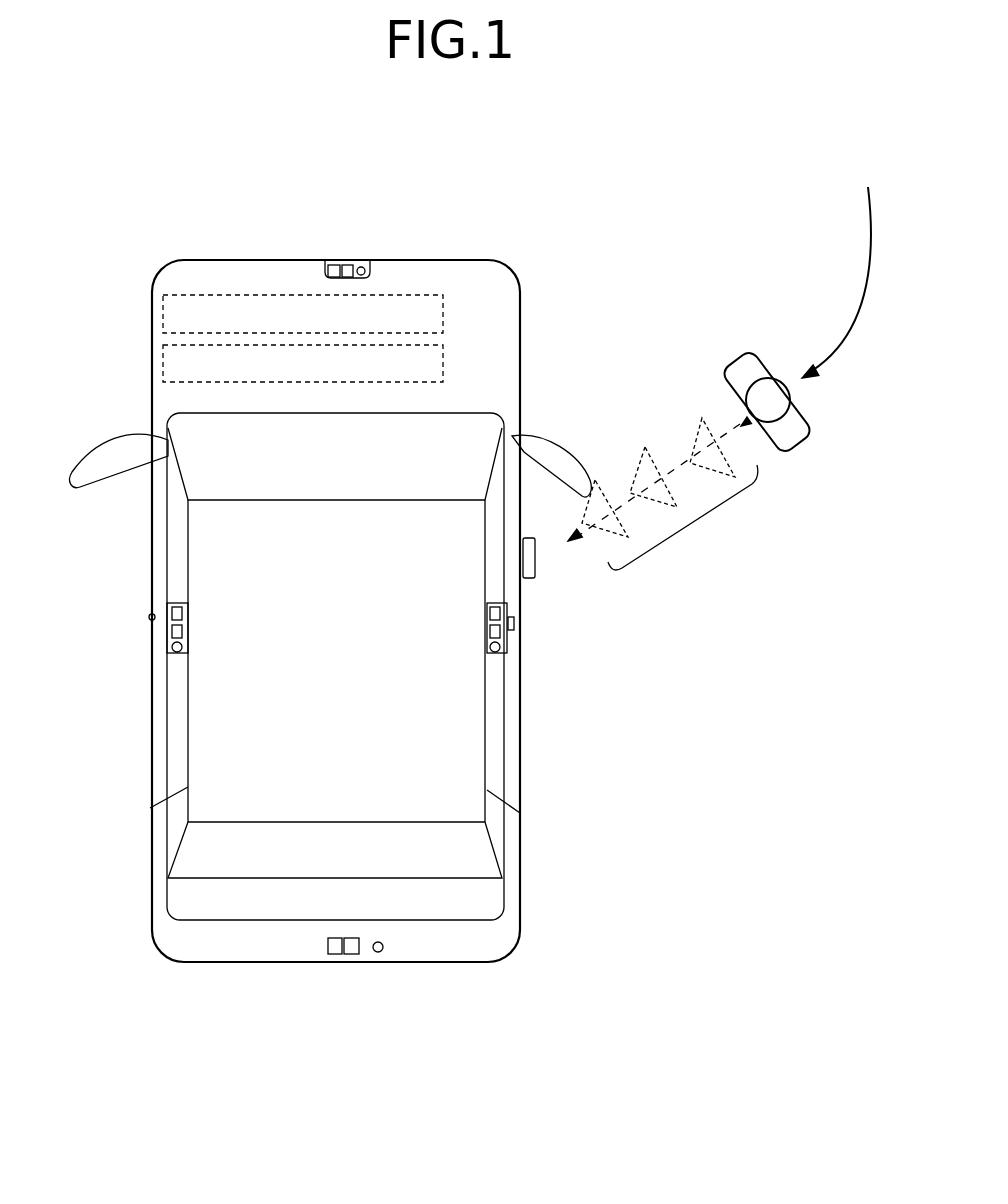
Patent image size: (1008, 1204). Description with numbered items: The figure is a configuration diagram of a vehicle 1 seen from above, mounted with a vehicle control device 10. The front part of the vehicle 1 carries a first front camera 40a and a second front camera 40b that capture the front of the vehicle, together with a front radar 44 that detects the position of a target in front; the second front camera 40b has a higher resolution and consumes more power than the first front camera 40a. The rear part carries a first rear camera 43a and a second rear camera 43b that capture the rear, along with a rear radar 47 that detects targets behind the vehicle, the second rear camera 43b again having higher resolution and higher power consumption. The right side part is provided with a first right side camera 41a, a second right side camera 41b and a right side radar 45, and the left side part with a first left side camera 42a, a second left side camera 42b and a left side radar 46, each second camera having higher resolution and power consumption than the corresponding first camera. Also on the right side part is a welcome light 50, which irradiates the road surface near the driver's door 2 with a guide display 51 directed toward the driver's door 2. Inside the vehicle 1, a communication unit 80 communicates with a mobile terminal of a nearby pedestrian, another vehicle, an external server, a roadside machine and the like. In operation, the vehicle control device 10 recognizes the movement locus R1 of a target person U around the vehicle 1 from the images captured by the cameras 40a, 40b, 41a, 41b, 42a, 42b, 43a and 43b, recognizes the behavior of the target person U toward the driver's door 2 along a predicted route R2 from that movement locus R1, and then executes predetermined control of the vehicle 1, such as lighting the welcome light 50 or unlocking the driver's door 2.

The vehicle 1 is at (510, 275).
The driver's door 2 is at (523, 507).
The vehicle control device 10 is at (163, 314).
The communication unit 80 is at (163, 358).
The first front camera 40a is at (322, 266).
The second front camera 40b is at (347, 265).
The front radar 44 is at (368, 268).
The first right side camera 41a is at (508, 617).
The second right side camera 41b is at (508, 635).
The right side radar 45 is at (508, 655).
The first left side camera 42a is at (150, 616).
The second left side camera 42b is at (168, 630).
The left side radar 46 is at (175, 652).
The first rear camera 43a is at (337, 960).
The second rear camera 43b is at (353, 960).
The rear radar 47 is at (383, 963).
The welcome light 50 is at (537, 555).
The guide display 51 is at (700, 530).
The target person U is at (727, 362).
The movement locus R1 is at (857, 295).
The predicted route R2 is at (677, 465).